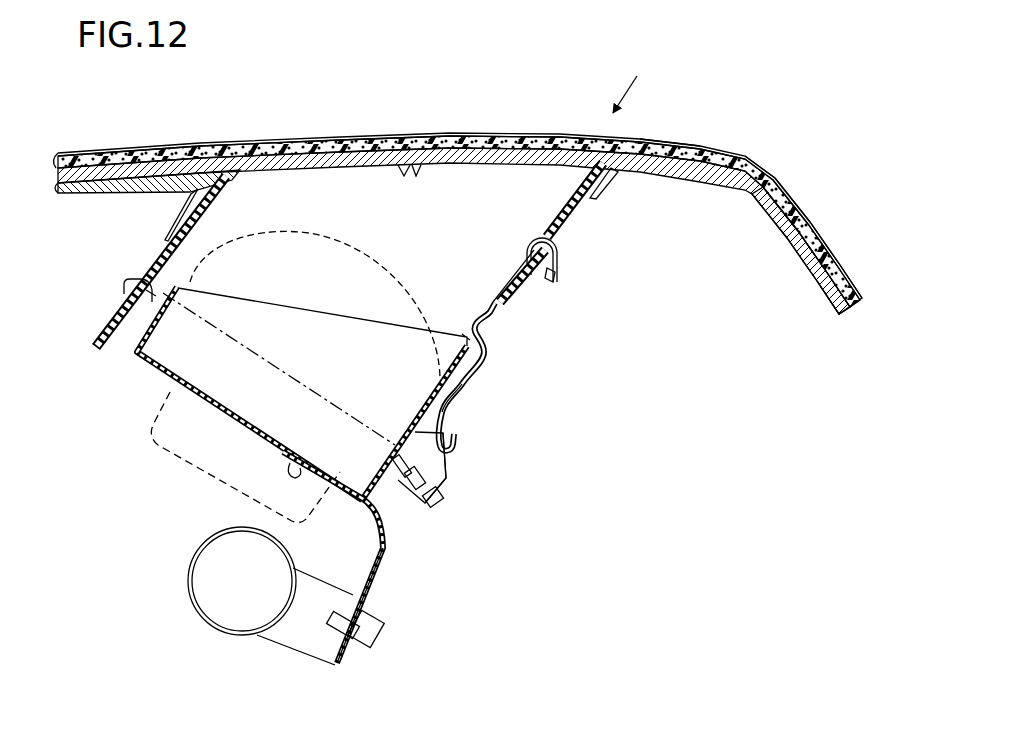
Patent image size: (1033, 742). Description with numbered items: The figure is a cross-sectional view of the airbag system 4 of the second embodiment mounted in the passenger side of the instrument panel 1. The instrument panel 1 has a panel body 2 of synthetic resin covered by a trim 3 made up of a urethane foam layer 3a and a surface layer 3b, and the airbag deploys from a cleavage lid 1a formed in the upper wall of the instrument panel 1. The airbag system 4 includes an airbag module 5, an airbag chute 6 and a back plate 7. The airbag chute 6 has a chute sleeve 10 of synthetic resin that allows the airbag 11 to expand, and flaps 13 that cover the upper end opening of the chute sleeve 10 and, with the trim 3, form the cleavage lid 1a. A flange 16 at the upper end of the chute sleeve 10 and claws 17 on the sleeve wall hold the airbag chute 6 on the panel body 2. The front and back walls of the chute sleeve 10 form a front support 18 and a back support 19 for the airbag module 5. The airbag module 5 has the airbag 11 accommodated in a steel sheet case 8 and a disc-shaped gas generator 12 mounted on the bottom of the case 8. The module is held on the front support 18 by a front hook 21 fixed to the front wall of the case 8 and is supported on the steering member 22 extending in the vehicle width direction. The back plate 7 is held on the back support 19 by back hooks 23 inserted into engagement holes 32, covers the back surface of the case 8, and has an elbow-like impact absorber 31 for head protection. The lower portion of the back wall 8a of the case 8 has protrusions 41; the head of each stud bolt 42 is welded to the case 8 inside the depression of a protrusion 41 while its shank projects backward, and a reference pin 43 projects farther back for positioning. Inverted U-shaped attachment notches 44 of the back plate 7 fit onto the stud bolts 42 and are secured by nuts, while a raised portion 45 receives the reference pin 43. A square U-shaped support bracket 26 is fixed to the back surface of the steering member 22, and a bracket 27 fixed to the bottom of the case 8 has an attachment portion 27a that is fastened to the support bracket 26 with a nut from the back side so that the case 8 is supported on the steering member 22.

The instrument panel 1 is at (796, 266).
The cleavage lid 1a is at (440, 135).
The panel body 2 is at (752, 200).
The trim 3 is at (815, 237).
The urethane foam layer 3a is at (725, 152).
The surface layer 3b is at (790, 190).
The airbag system 4 is at (110, 287).
The airbag module 5 is at (158, 390).
The airbag chute 6 is at (232, 162).
The back plate 7 is at (490, 340).
The case 8 is at (128, 360).
The back wall 8a is at (478, 382).
The chute sleeve 10 is at (560, 195).
The airbag 11 is at (341, 250).
The gas generator 12 is at (172, 470).
The flaps 13 is at (352, 160).
The flange 16 is at (660, 143).
The claws 17 is at (185, 207).
The front support 18 is at (210, 216).
The back support 19 is at (515, 265).
The front hook 21 is at (126, 280).
The steering member 22 is at (230, 636).
The back hooks 23 is at (566, 255).
The support bracket 26 is at (305, 642).
The bracket 27 is at (298, 464).
The bracket lower portion 27a is at (383, 572).
The impact absorber 31 is at (446, 437).
The engagement holes 32 is at (558, 272).
The protrusions 41 is at (445, 438).
The stud bolt 42 is at (420, 492).
The reference pin 43 is at (441, 505).
The attachment notches 44 is at (396, 482).
The raised portion 45 is at (447, 478).